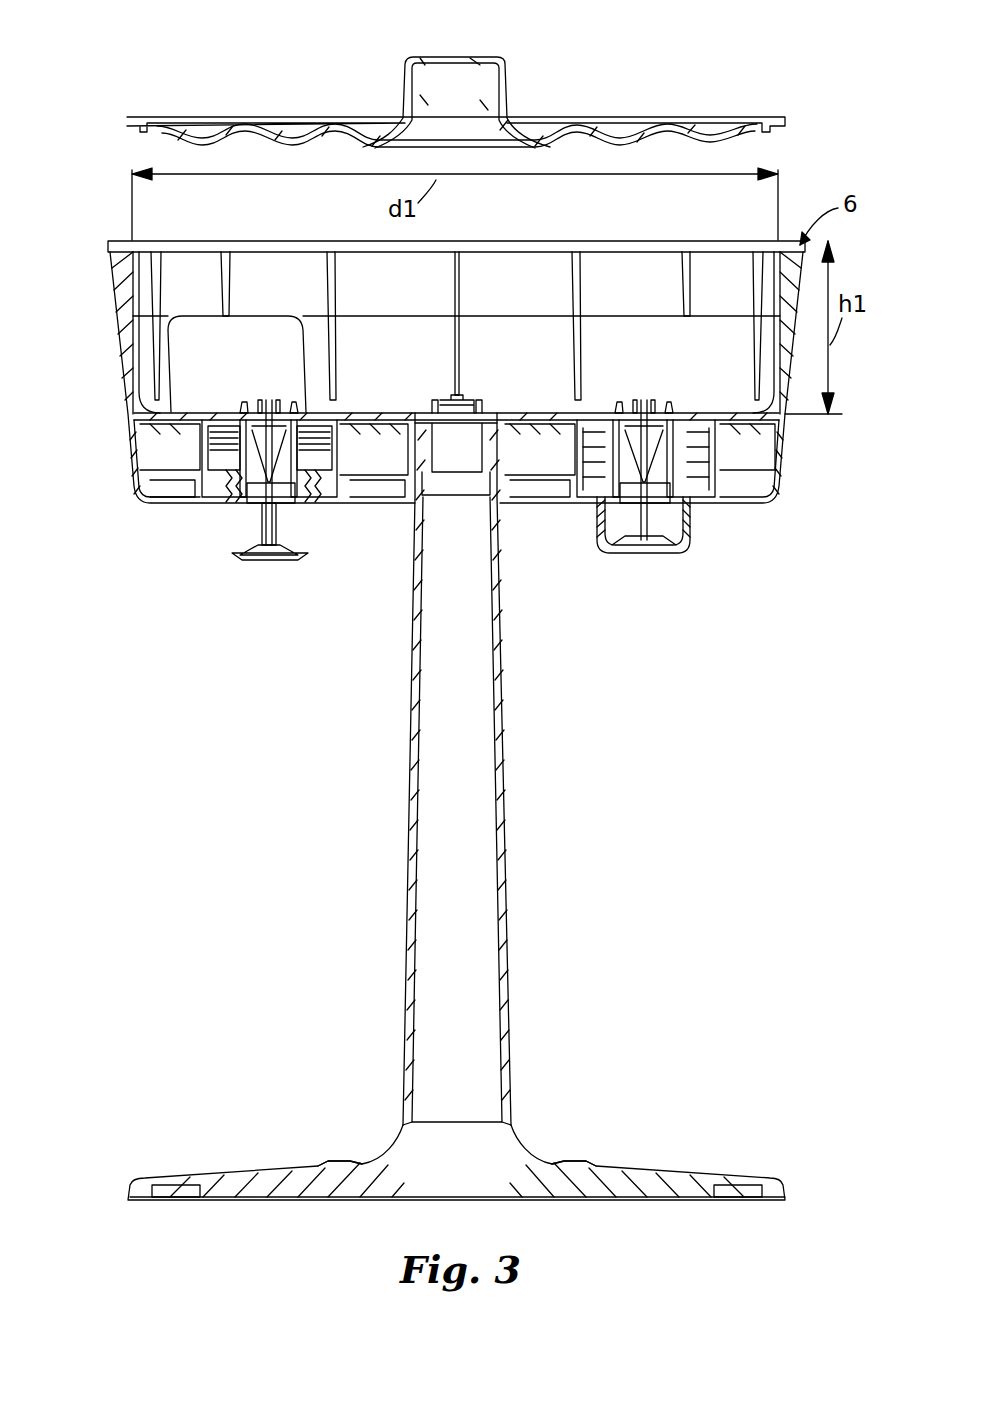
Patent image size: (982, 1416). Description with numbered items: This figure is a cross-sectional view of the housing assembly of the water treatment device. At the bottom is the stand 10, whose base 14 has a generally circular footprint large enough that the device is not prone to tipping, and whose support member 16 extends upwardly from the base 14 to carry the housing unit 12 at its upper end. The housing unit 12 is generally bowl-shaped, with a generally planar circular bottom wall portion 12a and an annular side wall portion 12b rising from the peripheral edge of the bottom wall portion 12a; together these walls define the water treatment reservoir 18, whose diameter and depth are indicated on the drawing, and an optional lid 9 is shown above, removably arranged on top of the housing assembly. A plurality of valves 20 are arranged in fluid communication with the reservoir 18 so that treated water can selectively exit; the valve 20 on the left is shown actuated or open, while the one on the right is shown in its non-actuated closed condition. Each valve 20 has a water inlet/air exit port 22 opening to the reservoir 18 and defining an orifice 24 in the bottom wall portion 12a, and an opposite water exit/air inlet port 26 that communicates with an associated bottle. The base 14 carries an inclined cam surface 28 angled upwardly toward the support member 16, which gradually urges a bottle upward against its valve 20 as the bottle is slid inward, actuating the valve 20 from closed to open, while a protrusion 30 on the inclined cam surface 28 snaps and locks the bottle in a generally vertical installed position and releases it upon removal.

The lid 9 is at (588, 138).
The stand 10 is at (410, 994).
The housing unit 12 is at (146, 500).
The bottom wall portion 12a is at (369, 413).
The side wall portion 12b is at (126, 332).
The base 14 is at (220, 1187).
The support member 16 is at (418, 731).
The water treatment reservoir 18 is at (516, 333).
The valve 20 is at (216, 527).
The water inlet/air exit port 22 is at (280, 408).
The orifice 24 is at (650, 422).
The water exit/air inlet port 26 is at (292, 510).
The inclined cam surface 28 is at (197, 1183).
The protrusion 30 is at (331, 1160).